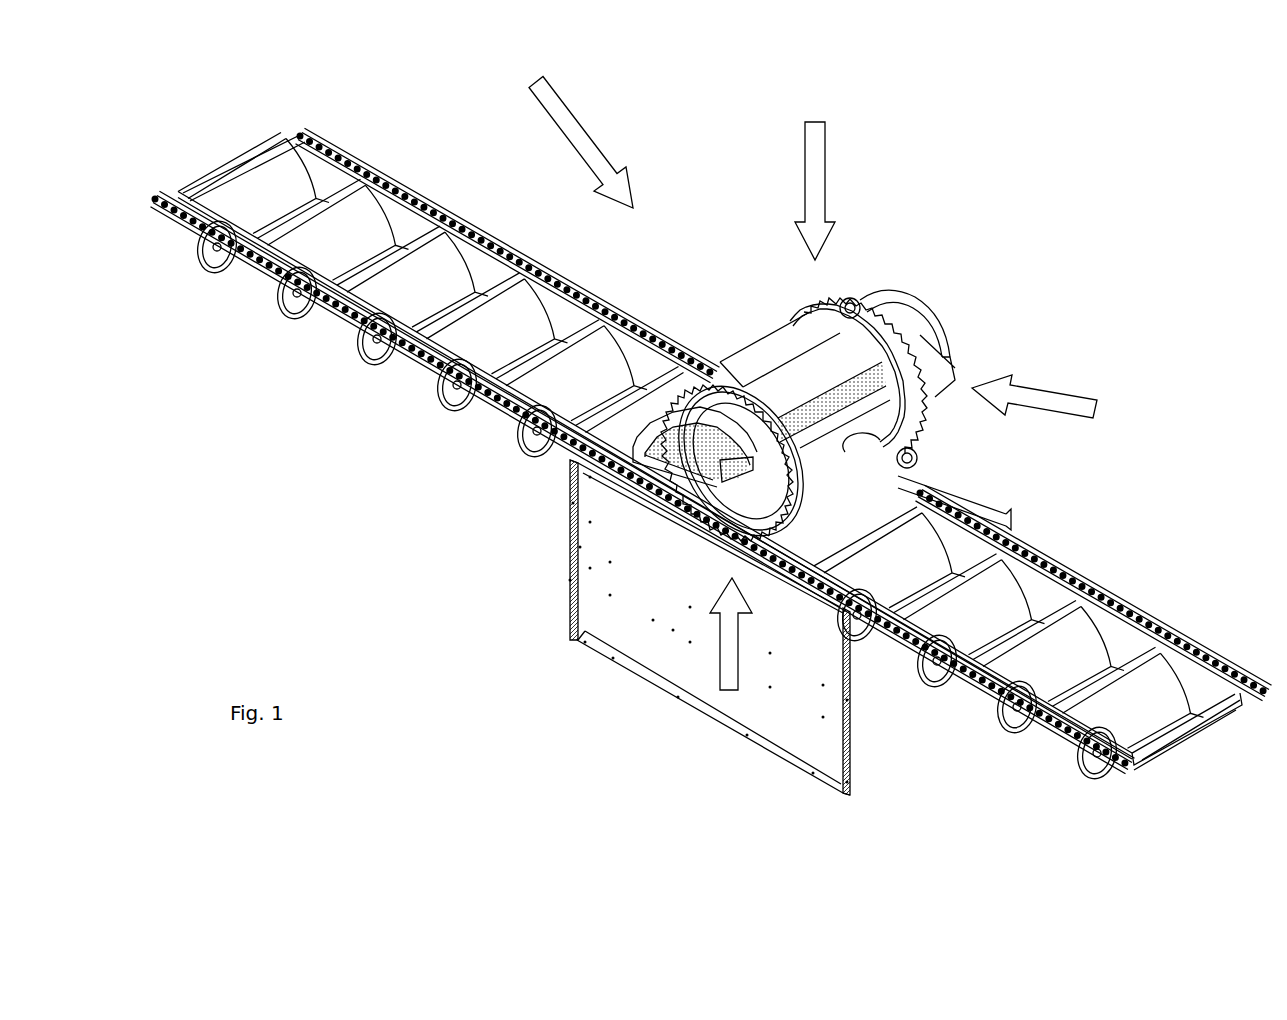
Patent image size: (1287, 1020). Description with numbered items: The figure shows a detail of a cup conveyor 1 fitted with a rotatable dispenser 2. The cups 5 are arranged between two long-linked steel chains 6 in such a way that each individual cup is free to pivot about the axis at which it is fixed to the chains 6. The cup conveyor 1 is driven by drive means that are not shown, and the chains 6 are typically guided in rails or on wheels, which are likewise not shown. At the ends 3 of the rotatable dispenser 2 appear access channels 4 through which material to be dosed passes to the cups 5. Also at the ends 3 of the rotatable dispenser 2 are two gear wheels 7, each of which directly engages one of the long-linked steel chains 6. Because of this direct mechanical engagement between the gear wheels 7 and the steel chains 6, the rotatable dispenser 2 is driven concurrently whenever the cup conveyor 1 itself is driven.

The cup conveyor 1 is at (581, 143).
The rotatable dispenser 2 is at (815, 191).
The ends 3 is at (903, 532).
The access channels 4 is at (794, 388).
The cups 5 is at (710, 452).
The long-linked steel chains 6 is at (503, 403).
The gear wheels 7 is at (838, 294).